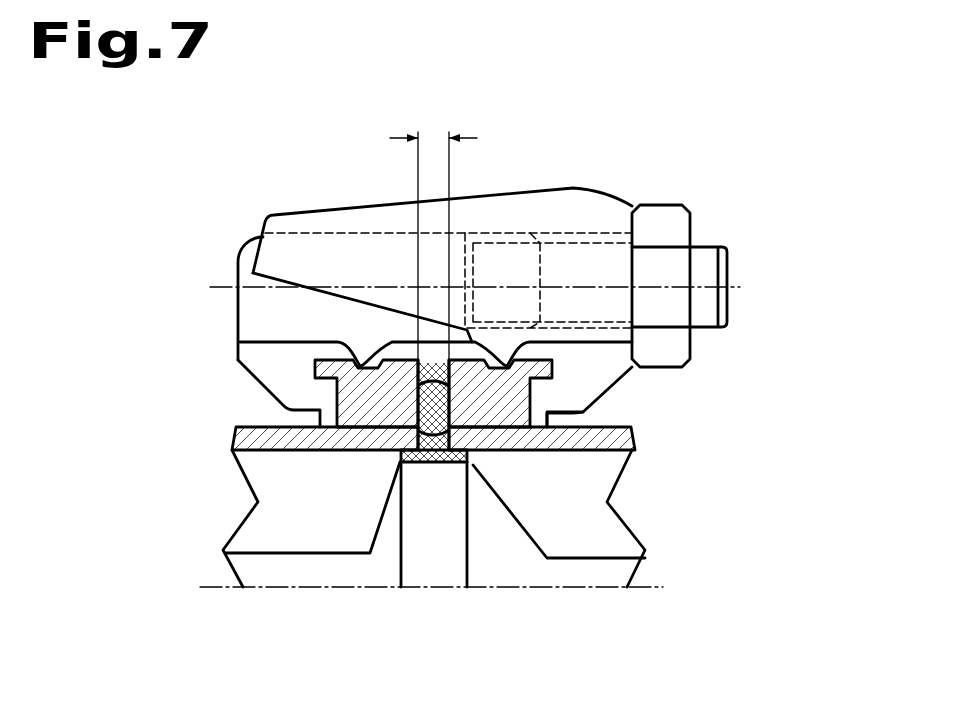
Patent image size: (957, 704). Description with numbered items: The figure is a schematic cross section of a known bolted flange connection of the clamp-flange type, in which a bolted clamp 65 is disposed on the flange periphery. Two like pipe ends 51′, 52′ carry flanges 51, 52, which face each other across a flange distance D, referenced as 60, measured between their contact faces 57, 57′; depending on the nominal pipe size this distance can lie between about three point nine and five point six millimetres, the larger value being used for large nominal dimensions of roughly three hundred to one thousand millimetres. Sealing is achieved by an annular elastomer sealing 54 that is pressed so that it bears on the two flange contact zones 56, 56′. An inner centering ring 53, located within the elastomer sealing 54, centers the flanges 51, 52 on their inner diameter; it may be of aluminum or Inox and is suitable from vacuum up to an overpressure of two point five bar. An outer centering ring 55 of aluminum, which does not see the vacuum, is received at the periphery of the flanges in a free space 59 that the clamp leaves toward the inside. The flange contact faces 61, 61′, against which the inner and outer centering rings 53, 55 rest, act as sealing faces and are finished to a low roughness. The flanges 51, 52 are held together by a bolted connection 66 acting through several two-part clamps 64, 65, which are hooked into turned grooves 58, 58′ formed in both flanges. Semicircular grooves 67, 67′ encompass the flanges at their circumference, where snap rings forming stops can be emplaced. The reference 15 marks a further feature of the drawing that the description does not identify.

The rail 15 is at (603, 590).
The flange 51 is at (377, 423).
The pipe end 51′ is at (298, 437).
The flange 52 is at (505, 427).
The pipe end 52′ is at (575, 438).
The inner centering ring 53 is at (425, 446).
The elastomer sealing 54 is at (433, 413).
The outer centering ring 55 is at (437, 373).
The flange contact zone 56 is at (407, 403).
The flange contact zone 56′ is at (453, 407).
The contact face 57 is at (225, 553).
The contact face 57′ is at (645, 559).
The turned groove 58 is at (328, 397).
The turned groove 58′ is at (537, 398).
The free space 59 is at (400, 333).
The flange distance D 60 is at (413, 115).
The flange contact face 61 is at (407, 372).
The flange contact face 61′ is at (453, 373).
The clamp part 64 is at (347, 315).
The bolted clamp 65 is at (587, 217).
The bolted connection 66 is at (668, 232).
The semicircular groove 67 is at (363, 363).
The semicircular groove 67′ is at (503, 367).